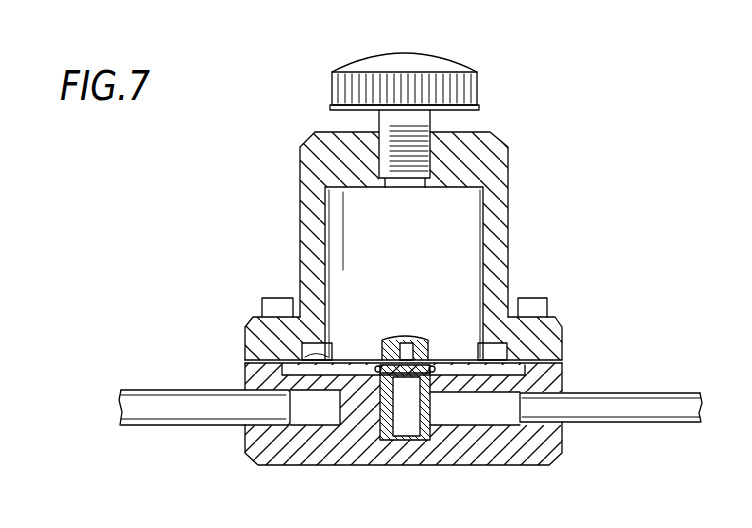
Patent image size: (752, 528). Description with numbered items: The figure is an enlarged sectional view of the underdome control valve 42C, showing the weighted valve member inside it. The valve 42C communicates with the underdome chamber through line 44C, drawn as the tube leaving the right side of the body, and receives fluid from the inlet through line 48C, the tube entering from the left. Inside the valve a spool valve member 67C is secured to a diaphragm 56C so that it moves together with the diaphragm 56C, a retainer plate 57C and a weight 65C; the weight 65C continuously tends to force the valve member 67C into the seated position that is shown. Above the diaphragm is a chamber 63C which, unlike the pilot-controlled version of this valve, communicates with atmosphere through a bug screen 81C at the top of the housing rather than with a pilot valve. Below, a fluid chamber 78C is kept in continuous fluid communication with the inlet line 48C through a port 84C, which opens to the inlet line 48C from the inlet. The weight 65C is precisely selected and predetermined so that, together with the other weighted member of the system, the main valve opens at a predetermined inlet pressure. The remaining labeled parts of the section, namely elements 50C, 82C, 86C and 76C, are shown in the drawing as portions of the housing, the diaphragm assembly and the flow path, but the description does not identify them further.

The underdome control valve 42C is at (520, 128).
The bug screen 81C is at (460, 82).
The upper housing body 50C is at (500, 203).
The chamber 63C is at (444, 226).
The retainer plate 57C is at (340, 338).
The diaphragm 56C is at (522, 313).
The diaphragm 82C is at (367, 356).
The fluid chamber 78C is at (542, 358).
The spool valve member 67C is at (420, 342).
The weight 65C is at (400, 338).
The port 84C is at (248, 453).
The line 48C is at (168, 397).
The outlet passage 86C is at (487, 426).
The line 44C is at (653, 393).
The valve seat insert 76C is at (385, 374).